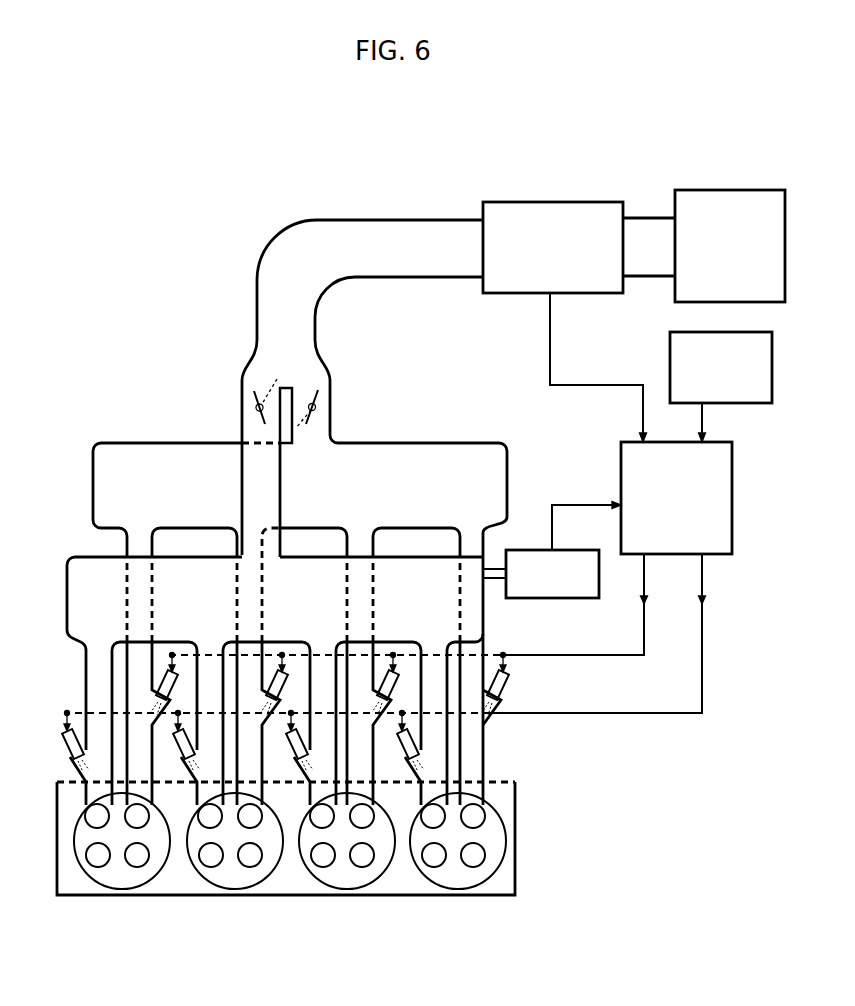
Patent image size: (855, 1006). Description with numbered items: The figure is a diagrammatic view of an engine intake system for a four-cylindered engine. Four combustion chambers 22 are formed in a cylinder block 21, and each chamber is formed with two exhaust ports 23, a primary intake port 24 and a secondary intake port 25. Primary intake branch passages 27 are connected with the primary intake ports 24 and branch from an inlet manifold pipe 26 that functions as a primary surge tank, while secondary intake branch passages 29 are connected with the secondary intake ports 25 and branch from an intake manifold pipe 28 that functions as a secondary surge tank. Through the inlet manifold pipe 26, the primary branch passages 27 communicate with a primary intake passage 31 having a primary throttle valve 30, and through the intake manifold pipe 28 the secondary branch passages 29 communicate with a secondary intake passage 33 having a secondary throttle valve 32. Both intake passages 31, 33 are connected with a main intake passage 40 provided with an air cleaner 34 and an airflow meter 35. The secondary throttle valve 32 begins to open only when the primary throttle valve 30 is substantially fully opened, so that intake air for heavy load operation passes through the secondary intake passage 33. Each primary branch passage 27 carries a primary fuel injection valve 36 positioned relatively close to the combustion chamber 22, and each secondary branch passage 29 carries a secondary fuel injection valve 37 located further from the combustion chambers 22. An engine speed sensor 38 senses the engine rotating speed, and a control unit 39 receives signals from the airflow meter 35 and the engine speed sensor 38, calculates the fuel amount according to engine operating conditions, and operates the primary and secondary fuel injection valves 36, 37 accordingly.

The cylinder block 21 is at (310, 885).
The combustion chamber 22 is at (120, 877).
The exhaust port 23 is at (90, 860).
The primary intake port 24 is at (87, 822).
The secondary intake port 25 is at (148, 823).
The inlet manifold pipe 26 is at (70, 622).
The primary intake branch passage 27 is at (92, 666).
The intake manifold pipe 28 is at (142, 455).
The secondary intake branch passage 29 is at (136, 664).
The primary throttle valve 30 is at (250, 398).
The primary intake passage 31 is at (243, 487).
The secondary throttle valve 32 is at (322, 390).
The secondary intake passage 33 is at (322, 426).
The air cleaner 34 is at (708, 190).
The airflow meter 35 is at (583, 202).
The primary fuel injection valve 36 is at (172, 740).
The secondary fuel injection valve 37 is at (159, 667).
The engine speed sensor 38 is at (670, 347).
The control unit 39 is at (621, 462).
The main intake passage 40 is at (432, 220).